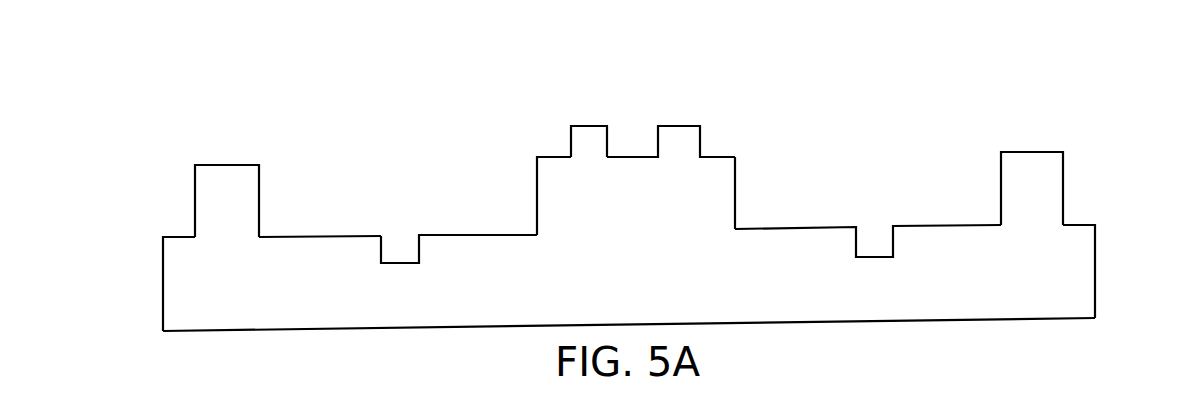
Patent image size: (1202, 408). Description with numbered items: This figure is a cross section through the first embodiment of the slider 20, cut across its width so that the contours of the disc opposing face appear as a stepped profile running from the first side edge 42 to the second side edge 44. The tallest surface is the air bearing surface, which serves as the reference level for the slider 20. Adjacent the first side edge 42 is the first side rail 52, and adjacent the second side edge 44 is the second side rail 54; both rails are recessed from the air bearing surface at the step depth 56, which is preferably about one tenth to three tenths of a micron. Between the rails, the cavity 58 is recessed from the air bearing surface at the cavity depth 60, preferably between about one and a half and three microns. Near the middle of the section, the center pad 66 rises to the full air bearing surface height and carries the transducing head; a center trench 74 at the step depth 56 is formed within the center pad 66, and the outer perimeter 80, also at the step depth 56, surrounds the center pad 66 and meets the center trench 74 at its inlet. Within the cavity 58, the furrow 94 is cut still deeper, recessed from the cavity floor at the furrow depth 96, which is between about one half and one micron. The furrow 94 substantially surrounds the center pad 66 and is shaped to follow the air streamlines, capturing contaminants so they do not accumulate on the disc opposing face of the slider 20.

The slider 20 is at (199, 75).
The first side edge 42 is at (1095, 225).
The second side edge 44 is at (163, 238).
The first side rail 52 is at (1031, 167).
The second side rail 54 is at (218, 177).
The step depth 56 is at (722, 93).
The cavity 58 is at (309, 237).
The cavity depth 60 is at (502, 223).
The center pad 66 is at (590, 126).
The center trench 74 is at (634, 130).
The outer perimeter 80 is at (555, 157).
The furrow 94 is at (398, 238).
The furrow depth 96 is at (882, 195).